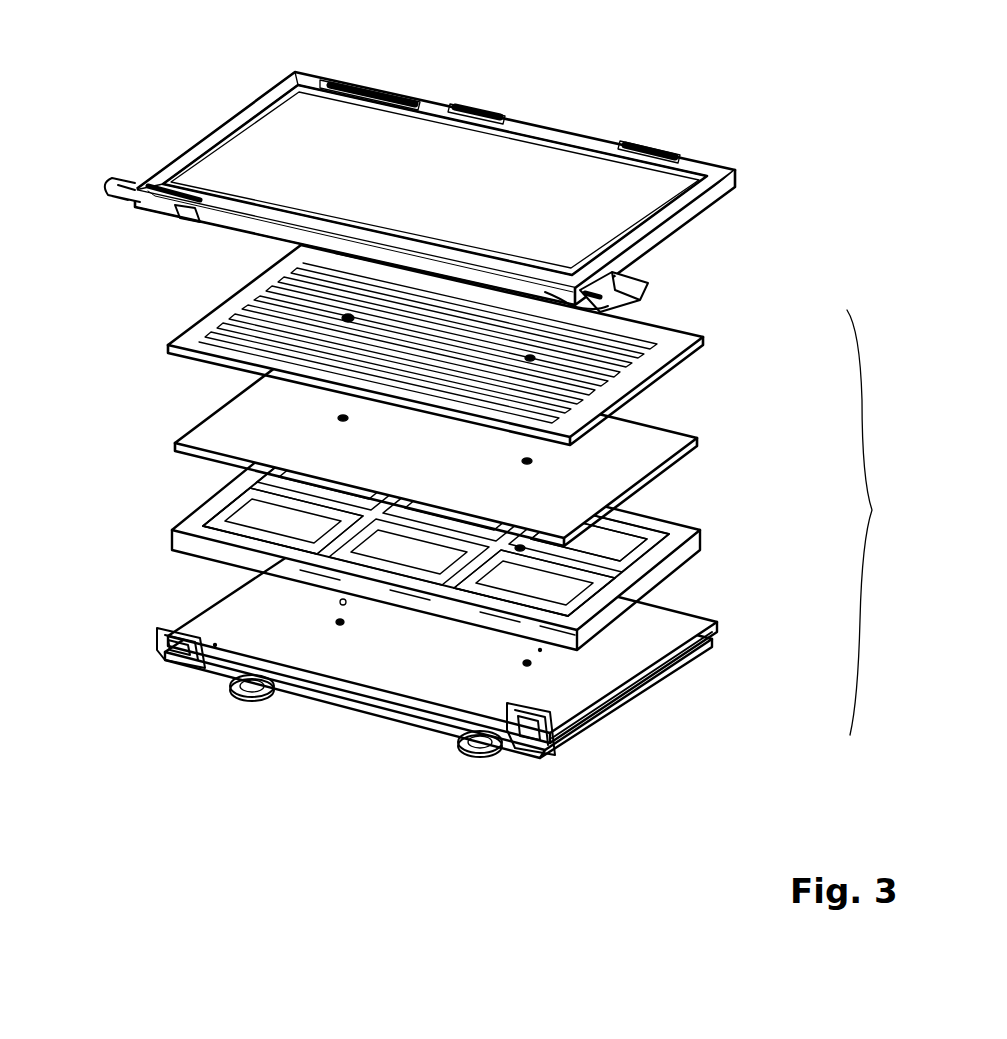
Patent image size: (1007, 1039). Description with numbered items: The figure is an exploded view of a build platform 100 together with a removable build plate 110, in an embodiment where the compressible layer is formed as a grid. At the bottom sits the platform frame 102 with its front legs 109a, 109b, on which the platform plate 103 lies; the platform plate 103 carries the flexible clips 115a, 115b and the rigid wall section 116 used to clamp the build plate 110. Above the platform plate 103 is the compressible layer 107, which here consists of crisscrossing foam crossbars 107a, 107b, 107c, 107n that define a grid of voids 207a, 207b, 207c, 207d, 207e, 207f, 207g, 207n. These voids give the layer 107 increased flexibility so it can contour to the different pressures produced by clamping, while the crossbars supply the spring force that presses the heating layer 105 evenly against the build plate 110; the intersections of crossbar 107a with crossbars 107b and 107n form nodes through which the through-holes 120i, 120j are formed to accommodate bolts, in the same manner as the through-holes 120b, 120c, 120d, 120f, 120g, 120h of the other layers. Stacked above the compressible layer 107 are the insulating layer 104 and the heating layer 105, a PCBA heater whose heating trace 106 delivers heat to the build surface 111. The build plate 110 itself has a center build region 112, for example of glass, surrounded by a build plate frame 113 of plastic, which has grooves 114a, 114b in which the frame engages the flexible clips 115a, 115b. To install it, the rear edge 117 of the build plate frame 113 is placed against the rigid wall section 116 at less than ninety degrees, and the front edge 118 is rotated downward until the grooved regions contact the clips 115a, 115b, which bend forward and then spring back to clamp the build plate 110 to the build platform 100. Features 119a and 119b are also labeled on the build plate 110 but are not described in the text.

The build platform 100 is at (898, 522).
The platform frame 102 is at (350, 713).
The platform plate 103 is at (230, 573).
The insulating layer 104 is at (175, 432).
The heating layer 105 is at (170, 335).
The heating trace 106 is at (273, 277).
The compressible layer 107 is at (175, 520).
The crossbar 107a is at (700, 545).
The crossbar 107b is at (262, 555).
The crossbar 107c is at (348, 555).
The crossbar 107n is at (440, 572).
The front leg 109a is at (240, 700).
The front leg 109b is at (470, 758).
The build plate 110 is at (690, 232).
The build surface 111 is at (415, 148).
The center build region 112 is at (312, 150).
The build plate frame 113 is at (200, 148).
The groove 114a is at (192, 215).
The groove 114b is at (640, 318).
The flexible clip 115a is at (185, 640).
The flexible clip 115b is at (535, 755).
The rigid wall section 116 is at (620, 648).
The rear edge 117 is at (598, 132).
The front edge 118 is at (236, 216).
The locking tab 119a is at (128, 175).
The locking tab 119b is at (645, 287).
The through-hole 120b is at (340, 625).
The through-hole 120c is at (343, 418).
The through-hole 120d is at (348, 318).
The through-hole 120f is at (530, 668).
The through-hole 120g is at (527, 461).
The through-hole 120h is at (530, 358).
The through-hole 120i is at (250, 525).
The through-hole 120j is at (640, 510).
The void 207a is at (300, 490).
The void 207b is at (515, 540).
The void 207c is at (573, 637).
The void 207d is at (690, 590).
The void 207e is at (495, 720).
The void 207f is at (400, 720).
The void 207g is at (300, 700).
The void 207n is at (300, 520).